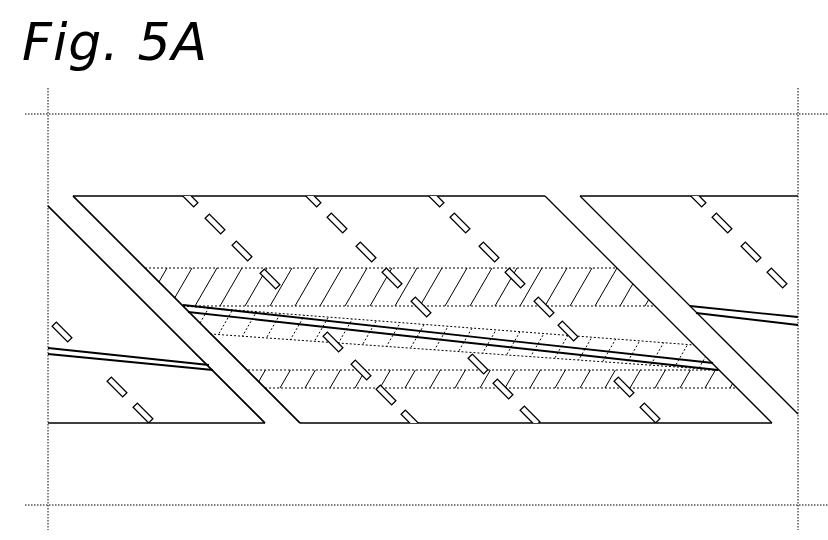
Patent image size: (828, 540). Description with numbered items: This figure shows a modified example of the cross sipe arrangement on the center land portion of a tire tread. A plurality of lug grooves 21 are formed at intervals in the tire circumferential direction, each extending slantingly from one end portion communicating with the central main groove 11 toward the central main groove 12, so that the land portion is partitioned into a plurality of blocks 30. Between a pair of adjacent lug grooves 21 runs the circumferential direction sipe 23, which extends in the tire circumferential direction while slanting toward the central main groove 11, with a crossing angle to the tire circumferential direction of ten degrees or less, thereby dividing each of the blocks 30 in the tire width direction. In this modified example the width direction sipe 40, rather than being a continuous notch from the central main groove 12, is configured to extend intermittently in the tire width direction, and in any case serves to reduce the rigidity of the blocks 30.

The central main groove 11 is at (426, 158).
The central main groove 12 is at (451, 489).
The lug groove 21 is at (576, 200).
The circumferential direction sipe 23 is at (658, 365).
The block 30 is at (131, 213).
The width direction sipe 40 is at (222, 224).